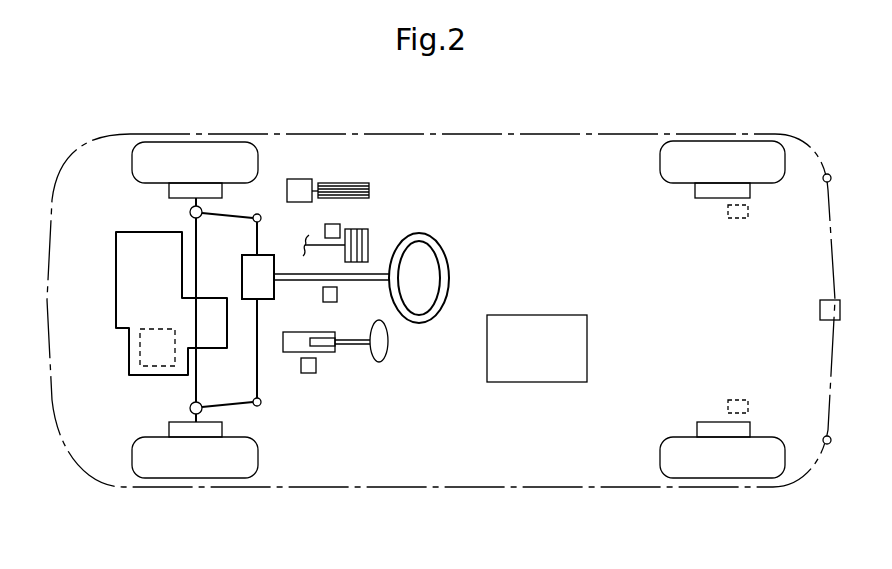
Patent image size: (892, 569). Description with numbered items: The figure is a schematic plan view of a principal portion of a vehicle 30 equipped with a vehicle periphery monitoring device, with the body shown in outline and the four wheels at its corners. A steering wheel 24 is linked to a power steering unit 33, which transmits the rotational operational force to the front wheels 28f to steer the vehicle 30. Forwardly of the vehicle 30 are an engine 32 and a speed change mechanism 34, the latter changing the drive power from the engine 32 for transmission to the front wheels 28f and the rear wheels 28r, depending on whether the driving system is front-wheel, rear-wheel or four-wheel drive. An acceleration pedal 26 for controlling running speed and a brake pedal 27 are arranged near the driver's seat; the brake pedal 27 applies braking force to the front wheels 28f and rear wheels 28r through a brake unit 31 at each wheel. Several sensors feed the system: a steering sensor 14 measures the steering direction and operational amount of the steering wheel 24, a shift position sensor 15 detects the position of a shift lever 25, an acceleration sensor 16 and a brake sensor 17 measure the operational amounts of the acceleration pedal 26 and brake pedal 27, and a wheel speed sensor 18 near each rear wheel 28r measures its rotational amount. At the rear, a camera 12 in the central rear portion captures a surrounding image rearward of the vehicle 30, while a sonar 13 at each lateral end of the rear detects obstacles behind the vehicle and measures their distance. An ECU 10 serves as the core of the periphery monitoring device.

The ECU 10 is at (537, 315).
The camera 12 is at (820, 308).
The sonar 13 is at (827, 174).
The steering sensor 14 is at (330, 303).
The shift position sensor 15 is at (317, 366).
The acceleration sensor 16 is at (298, 179).
The brake sensor 17 is at (325, 231).
The wheel speed sensor 18 is at (738, 218).
The steering wheel 24 is at (449, 266).
The shift lever 25 is at (388, 343).
The acceleration pedal 26 is at (356, 183).
The brake pedal 27 is at (369, 240).
The front wheels 28f is at (196, 142).
The rear wheels 28r is at (720, 141).
The vehicle 30 is at (553, 134).
The brake unit 31 is at (169, 190).
The engine 32 is at (158, 375).
The power steering unit 33 is at (242, 283).
The speed change mechanism 34 is at (140, 350).